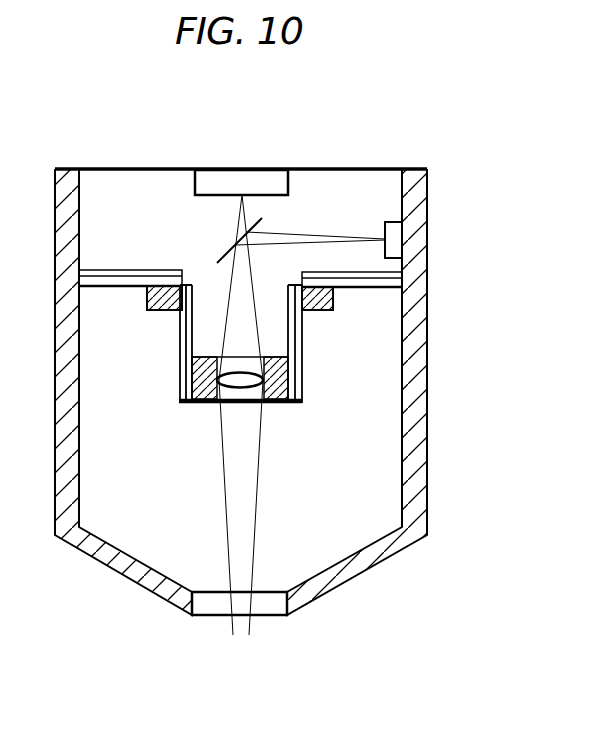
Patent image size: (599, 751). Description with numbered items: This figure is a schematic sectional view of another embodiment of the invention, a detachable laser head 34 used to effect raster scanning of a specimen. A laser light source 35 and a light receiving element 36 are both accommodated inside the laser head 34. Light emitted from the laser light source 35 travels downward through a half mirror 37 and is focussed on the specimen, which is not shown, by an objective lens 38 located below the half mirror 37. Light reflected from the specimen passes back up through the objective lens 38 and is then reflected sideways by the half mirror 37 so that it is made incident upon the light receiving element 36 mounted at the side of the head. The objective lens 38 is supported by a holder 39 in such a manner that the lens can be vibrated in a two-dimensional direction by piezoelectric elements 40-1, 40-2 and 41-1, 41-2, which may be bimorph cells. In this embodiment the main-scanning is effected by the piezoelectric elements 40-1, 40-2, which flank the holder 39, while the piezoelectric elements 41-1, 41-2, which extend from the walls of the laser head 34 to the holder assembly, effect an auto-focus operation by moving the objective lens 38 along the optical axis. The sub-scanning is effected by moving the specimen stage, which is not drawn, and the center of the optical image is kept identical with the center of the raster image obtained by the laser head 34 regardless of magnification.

The laser head 34 is at (430, 358).
The laser light source 35 is at (265, 182).
The light receiving element 36 is at (393, 244).
The half mirror 37 is at (254, 229).
The objective lens 38 is at (240, 384).
The holder 39 is at (277, 397).
The piezoelectric element 40-1 is at (180, 371).
The piezoelectric element 40-2 is at (302, 371).
The piezoelectric element 41-1 is at (131, 277).
The piezoelectric element 41-2 is at (375, 278).